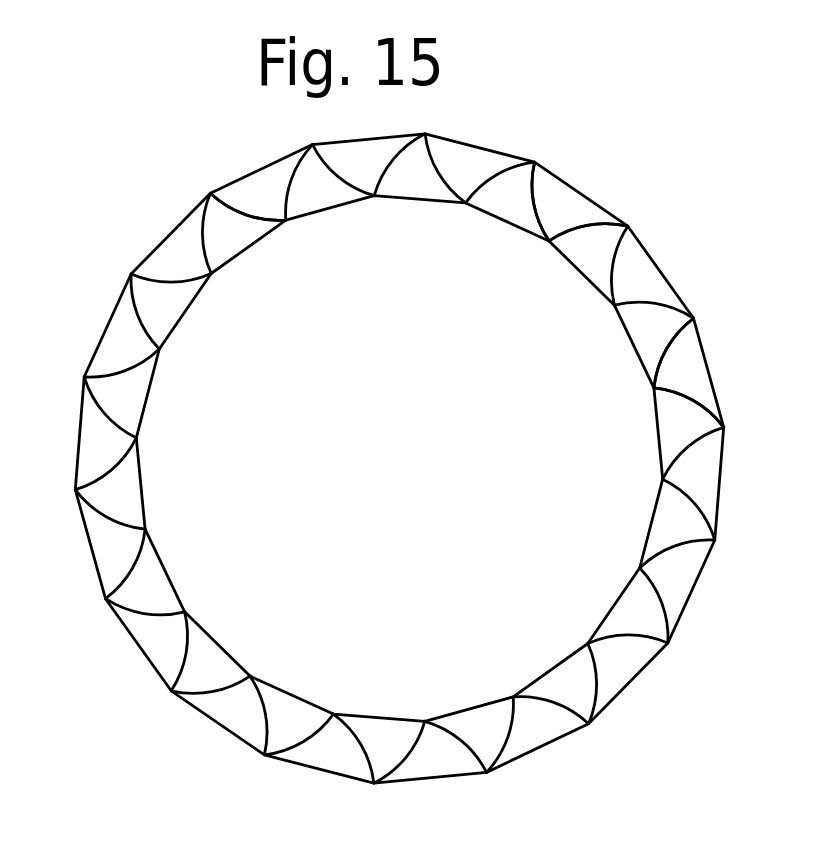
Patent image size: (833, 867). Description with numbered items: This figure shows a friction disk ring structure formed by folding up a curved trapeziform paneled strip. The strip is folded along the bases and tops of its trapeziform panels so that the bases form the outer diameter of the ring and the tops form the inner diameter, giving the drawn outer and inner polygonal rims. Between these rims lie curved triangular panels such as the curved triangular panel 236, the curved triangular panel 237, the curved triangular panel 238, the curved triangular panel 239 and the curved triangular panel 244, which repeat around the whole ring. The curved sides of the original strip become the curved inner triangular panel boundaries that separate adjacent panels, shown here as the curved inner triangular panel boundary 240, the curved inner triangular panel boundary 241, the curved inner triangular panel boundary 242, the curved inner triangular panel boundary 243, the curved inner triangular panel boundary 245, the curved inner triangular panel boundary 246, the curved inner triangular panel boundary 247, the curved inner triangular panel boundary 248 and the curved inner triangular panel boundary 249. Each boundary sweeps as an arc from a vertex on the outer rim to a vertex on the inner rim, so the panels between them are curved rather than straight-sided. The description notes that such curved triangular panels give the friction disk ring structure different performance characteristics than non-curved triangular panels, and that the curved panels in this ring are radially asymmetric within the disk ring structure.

The curved triangular panel 236 is at (115, 330).
The curved triangular panel 237 is at (257, 192).
The curved triangular panel 238 is at (578, 190).
The curved triangular panel 239 is at (705, 355).
The curved inner triangular panel boundary 240 is at (657, 430).
The curved inner triangular panel boundary 241 is at (668, 543).
The curved inner triangular panel boundary 242 is at (652, 588).
The curved inner triangular panel boundary 243 is at (362, 737).
The curved triangular panel 244 is at (205, 660).
The curved inner triangular panel boundary 245 is at (120, 497).
The curved inner triangular panel boundary 246 is at (200, 228).
The curved inner triangular panel boundary 247 is at (482, 212).
The curved inner triangular panel boundary 248 is at (577, 234).
The curved inner triangular panel boundary 249 is at (667, 345).